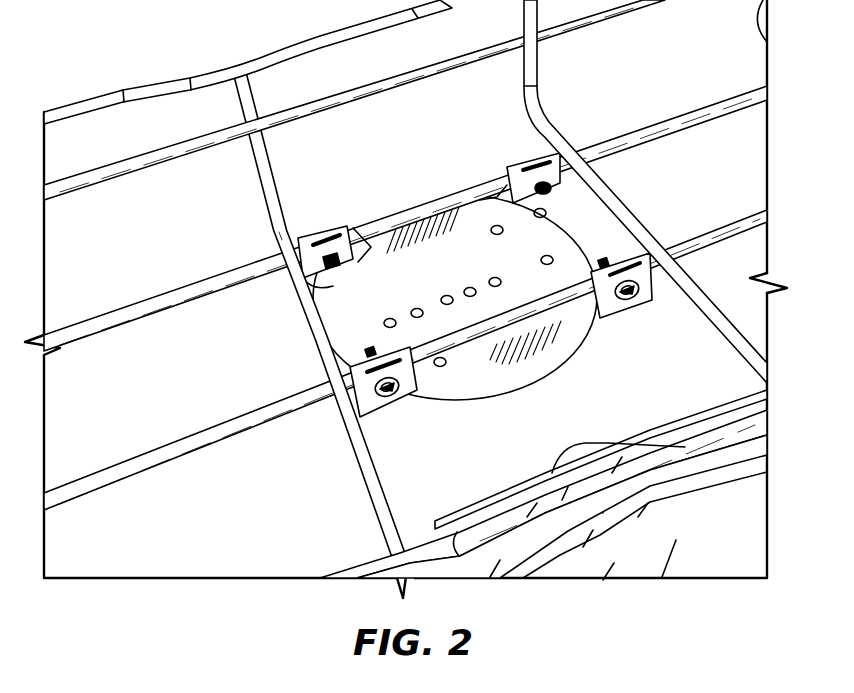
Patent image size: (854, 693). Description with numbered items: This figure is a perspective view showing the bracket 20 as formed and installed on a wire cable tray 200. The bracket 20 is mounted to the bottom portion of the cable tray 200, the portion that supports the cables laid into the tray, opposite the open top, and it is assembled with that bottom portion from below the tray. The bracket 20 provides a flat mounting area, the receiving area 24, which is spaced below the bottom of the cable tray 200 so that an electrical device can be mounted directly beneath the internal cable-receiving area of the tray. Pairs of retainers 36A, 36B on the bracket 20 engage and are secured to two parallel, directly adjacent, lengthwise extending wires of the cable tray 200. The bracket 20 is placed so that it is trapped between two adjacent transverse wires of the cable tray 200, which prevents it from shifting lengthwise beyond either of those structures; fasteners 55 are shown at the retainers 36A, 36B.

The cable tray 200 is at (147, 56).
The bracket 20 is at (436, 185).
The receiving area 24 is at (486, 267).
The retainer 36A is at (410, 392).
The retainer 36B is at (340, 226).
The fastener 55 is at (556, 198).